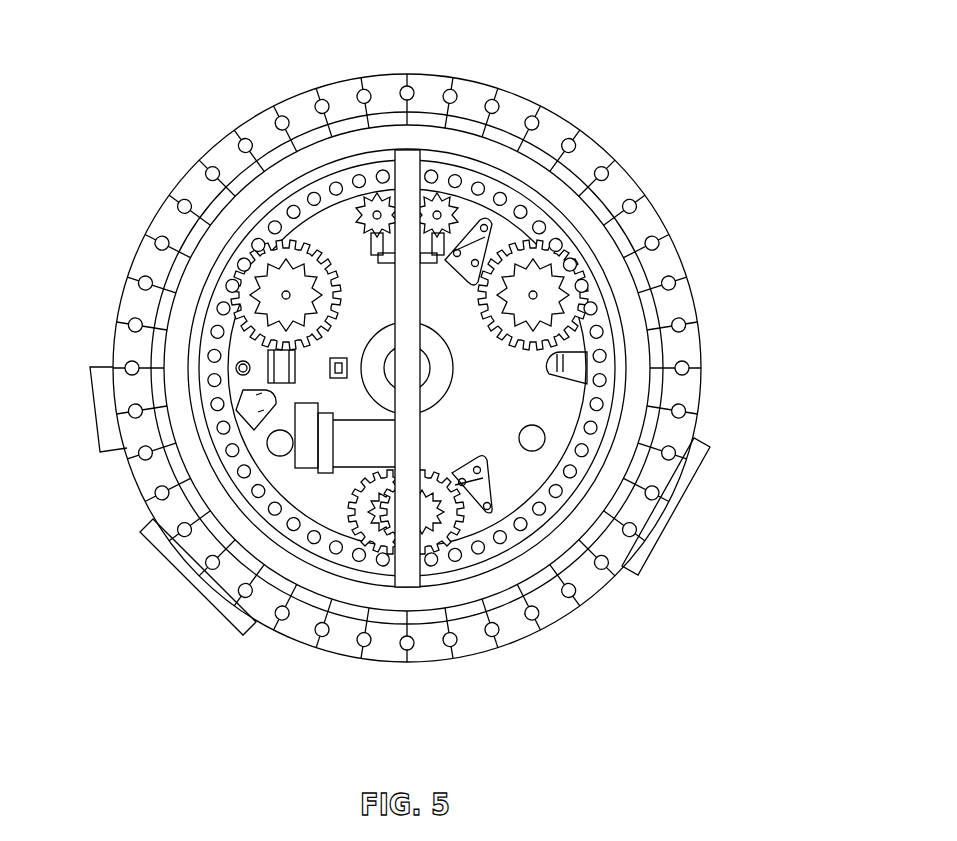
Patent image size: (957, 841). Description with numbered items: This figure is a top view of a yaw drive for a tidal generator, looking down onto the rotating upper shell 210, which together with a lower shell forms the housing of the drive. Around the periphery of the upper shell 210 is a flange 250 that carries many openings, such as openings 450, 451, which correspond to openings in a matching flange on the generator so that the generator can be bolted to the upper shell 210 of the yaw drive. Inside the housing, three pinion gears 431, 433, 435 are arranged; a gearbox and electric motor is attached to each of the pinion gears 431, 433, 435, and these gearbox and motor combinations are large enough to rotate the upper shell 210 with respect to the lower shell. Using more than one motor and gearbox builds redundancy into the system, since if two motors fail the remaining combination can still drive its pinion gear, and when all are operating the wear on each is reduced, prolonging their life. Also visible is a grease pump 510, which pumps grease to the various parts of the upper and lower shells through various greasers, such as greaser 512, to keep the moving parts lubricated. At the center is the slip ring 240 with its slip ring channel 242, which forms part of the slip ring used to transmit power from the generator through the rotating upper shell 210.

The upper shell 210 is at (548, 152).
The greaser 512 is at (480, 237).
The pinion gear 431 is at (537, 278).
The opening 450 is at (690, 320).
The flange 250 is at (705, 385).
The pinion gear 433 is at (263, 300).
The opening 451 is at (135, 475).
The slip ring 240 is at (427, 395).
The slip ring channel 242 is at (433, 567).
The grease pump 510 is at (305, 467).
The pinion gear 435 is at (392, 523).